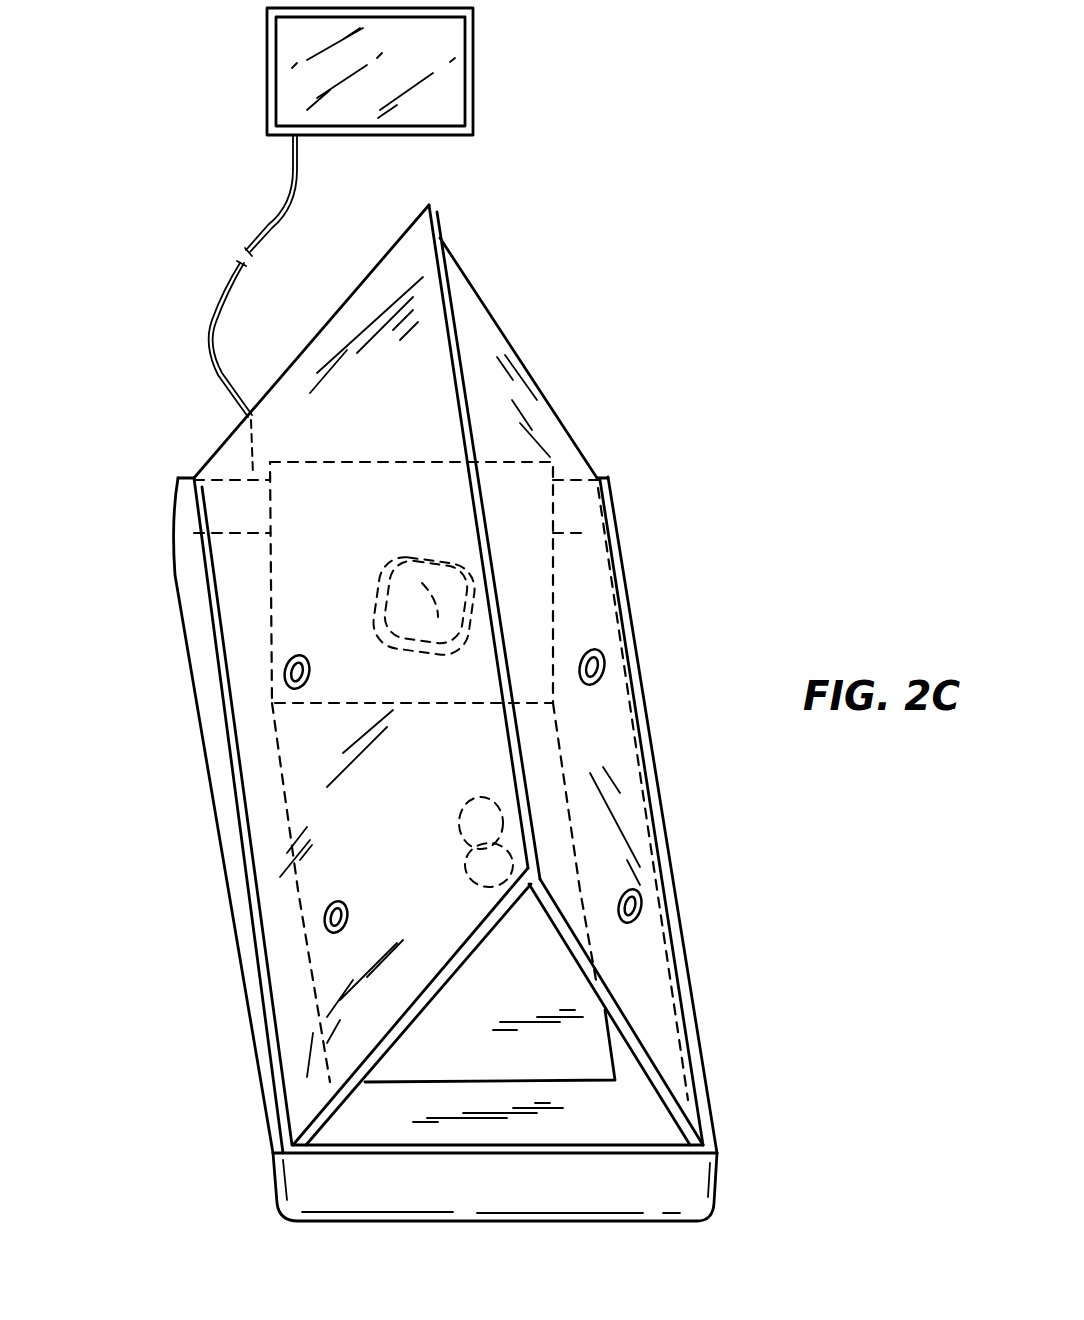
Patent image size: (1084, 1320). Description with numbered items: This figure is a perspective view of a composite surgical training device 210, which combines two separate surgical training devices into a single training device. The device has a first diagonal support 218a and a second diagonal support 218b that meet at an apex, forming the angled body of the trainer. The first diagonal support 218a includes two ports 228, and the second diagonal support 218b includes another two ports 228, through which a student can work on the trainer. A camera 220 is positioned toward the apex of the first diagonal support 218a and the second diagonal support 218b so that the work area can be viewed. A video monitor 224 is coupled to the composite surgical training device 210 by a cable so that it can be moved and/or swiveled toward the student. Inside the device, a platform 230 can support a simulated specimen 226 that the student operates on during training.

The composite surgical training device 210 is at (600, 423).
The video monitor 224 is at (470, 97).
The simulated specimen 226 is at (388, 593).
The ports 228 is at (190, 990).
The platform 230 is at (543, 560).
The camera 220 is at (493, 832).
The first diagonal support 218a is at (307, 1073).
The second diagonal support 218b is at (670, 1052).